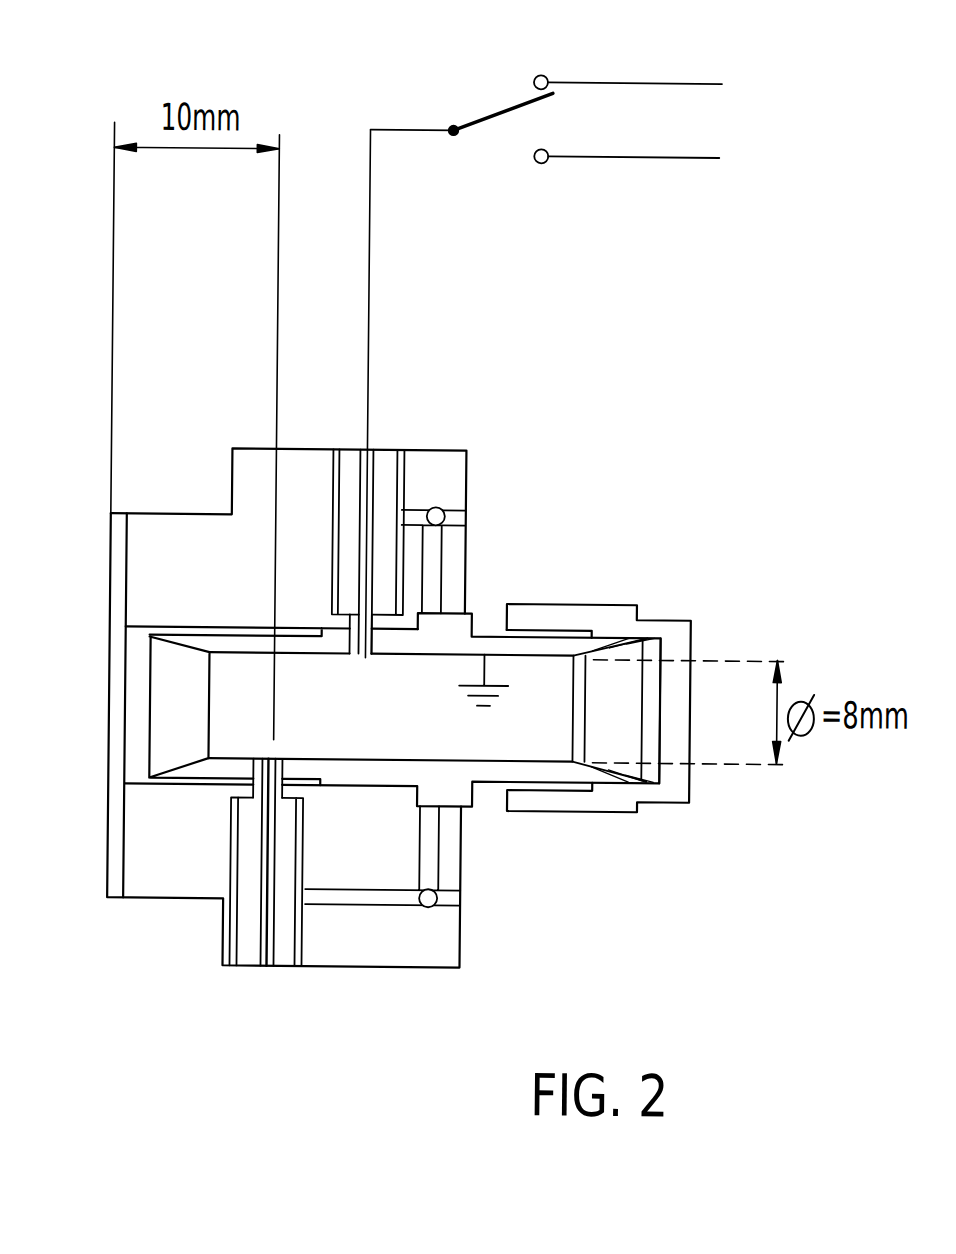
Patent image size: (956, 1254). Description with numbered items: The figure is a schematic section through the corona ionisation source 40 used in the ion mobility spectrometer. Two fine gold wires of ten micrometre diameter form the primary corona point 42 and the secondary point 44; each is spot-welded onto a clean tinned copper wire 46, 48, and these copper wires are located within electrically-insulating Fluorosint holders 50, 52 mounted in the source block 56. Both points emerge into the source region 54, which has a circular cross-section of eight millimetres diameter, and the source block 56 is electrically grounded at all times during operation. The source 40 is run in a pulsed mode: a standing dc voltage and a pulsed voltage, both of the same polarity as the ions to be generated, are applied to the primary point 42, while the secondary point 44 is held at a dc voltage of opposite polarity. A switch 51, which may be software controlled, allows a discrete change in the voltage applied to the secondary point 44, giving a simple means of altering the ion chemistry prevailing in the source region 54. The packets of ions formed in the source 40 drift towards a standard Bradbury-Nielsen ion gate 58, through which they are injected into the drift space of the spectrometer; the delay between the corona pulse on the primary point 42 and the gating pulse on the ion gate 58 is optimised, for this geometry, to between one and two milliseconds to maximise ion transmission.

The corona ionisation source 40 is at (485, 846).
The primary corona point 42 is at (276, 744).
The secondary point 44 is at (362, 657).
The tinned copper wire 46 is at (270, 855).
The tinned copper wire 48 is at (366, 552).
The Fluorosint holder 50 is at (291, 923).
The switch 51 is at (483, 106).
The Fluorosint holder 52 is at (346, 507).
The source region 54 is at (347, 720).
The source block 56 is at (489, 761).
The Bradbury-Nielsen ion gate 58 is at (103, 871).